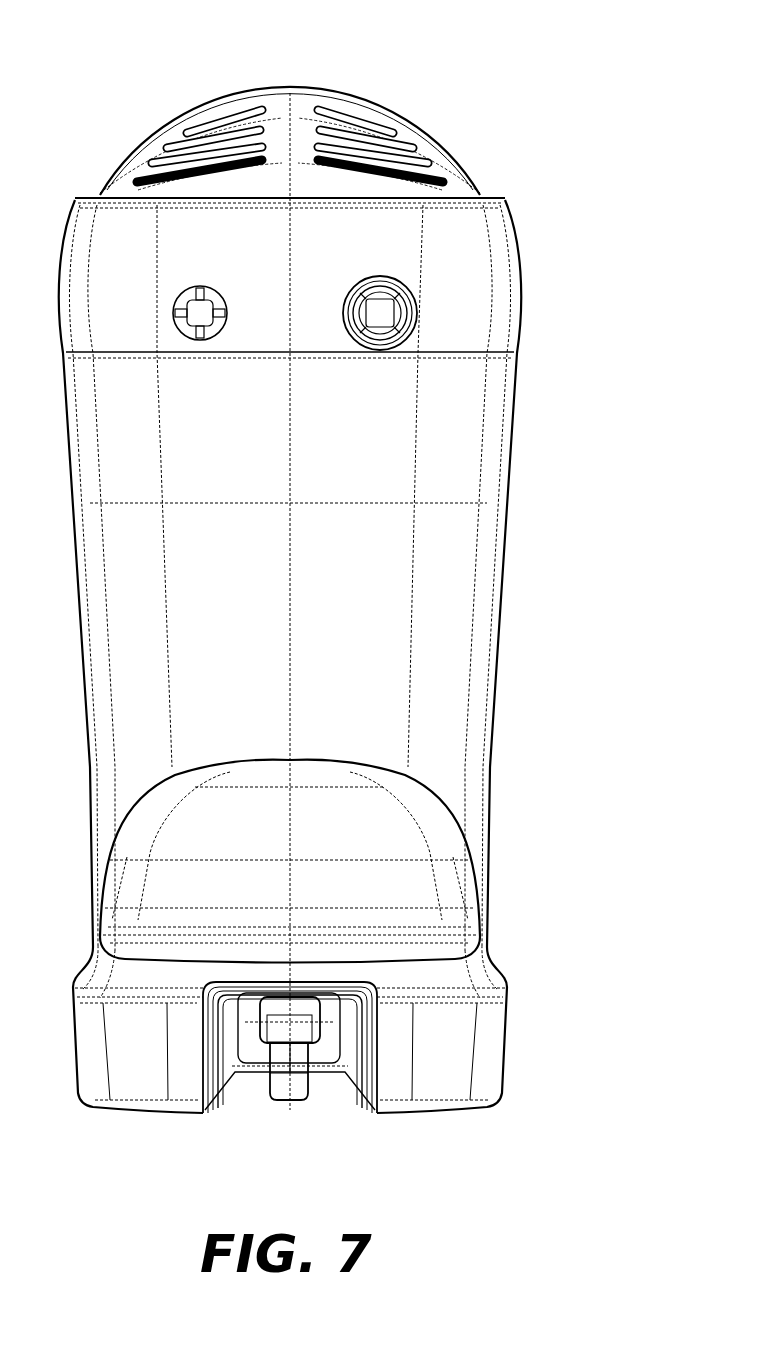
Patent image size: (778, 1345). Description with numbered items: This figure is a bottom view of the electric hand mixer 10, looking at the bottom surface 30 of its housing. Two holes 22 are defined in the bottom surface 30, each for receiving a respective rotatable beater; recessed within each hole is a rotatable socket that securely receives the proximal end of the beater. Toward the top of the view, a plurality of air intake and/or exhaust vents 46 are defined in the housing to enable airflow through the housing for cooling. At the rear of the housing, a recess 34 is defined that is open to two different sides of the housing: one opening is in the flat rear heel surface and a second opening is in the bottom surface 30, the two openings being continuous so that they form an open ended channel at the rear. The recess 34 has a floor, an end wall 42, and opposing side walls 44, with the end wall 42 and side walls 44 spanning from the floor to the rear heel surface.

The electric hand mixer 10 is at (351, 582).
The holes 22 is at (417, 316).
The bottom surface 30 is at (378, 452).
The recess 34 is at (343, 1067).
The end wall 42 is at (325, 1053).
The opposing side walls 44 is at (217, 1082).
The air intake and/or exhaust vents 46 is at (377, 120).